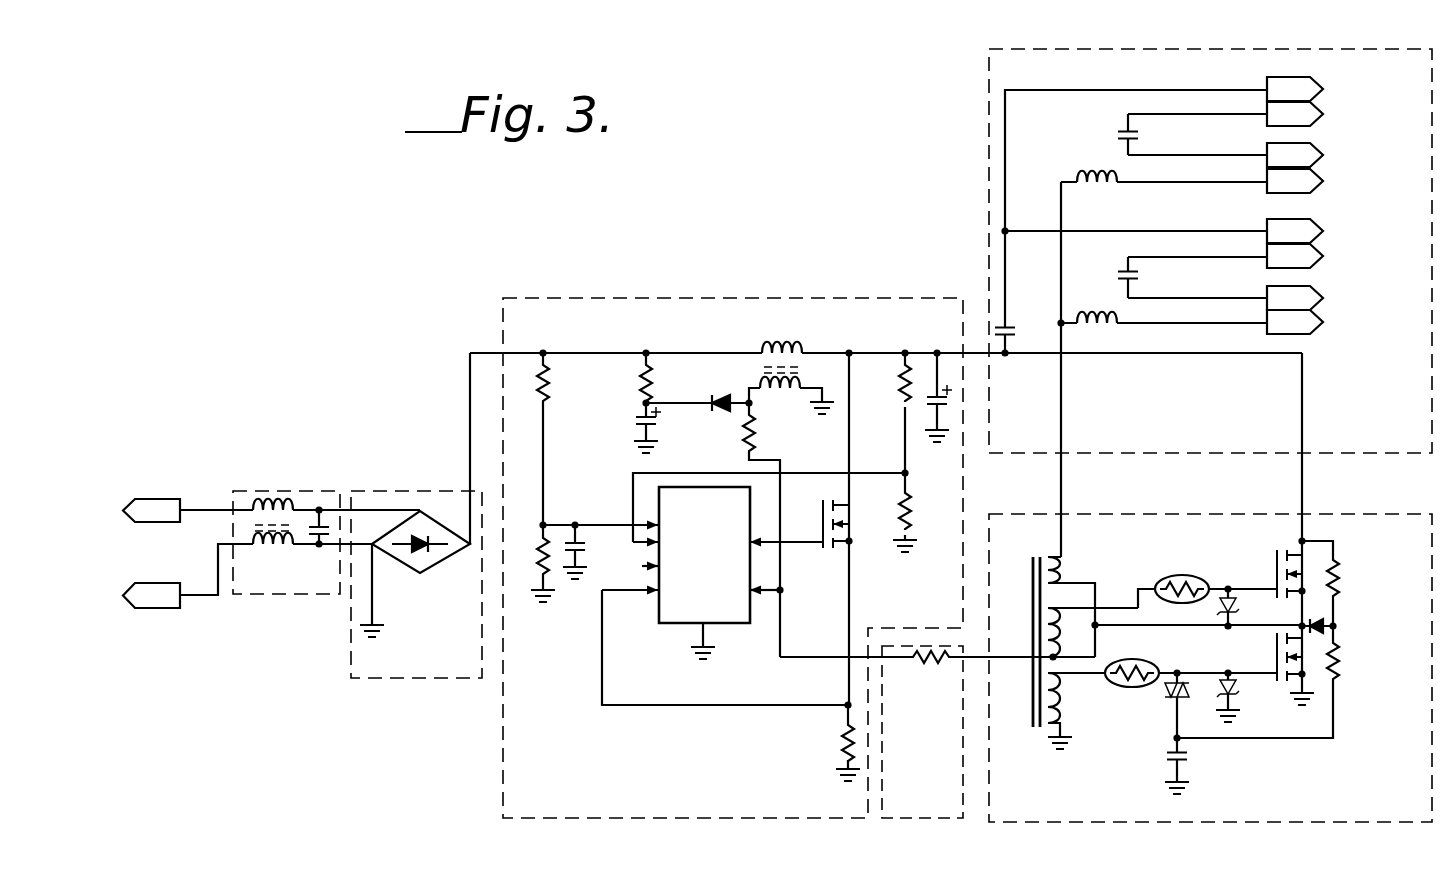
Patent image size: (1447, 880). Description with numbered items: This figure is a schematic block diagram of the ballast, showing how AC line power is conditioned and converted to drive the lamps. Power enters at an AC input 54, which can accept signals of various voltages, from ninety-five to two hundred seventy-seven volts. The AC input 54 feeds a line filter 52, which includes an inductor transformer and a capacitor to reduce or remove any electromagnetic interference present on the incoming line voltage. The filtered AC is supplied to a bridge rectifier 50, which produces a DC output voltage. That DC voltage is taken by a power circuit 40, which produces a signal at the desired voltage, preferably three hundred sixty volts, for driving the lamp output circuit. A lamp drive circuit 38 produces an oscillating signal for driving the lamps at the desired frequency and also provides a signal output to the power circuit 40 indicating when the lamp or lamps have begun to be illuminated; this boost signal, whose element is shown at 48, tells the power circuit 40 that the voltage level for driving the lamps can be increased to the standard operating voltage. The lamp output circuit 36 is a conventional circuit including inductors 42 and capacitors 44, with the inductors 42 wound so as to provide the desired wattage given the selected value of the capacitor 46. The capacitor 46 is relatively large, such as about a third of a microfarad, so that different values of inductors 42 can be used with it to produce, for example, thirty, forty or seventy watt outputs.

The lamp output circuit 36 is at (1182, 290).
The lamp drive circuit 38 is at (1115, 822).
The power circuit 40 is at (668, 818).
The inductors 42 is at (1090, 180).
The capacitors 44 is at (1140, 136).
The capacitor 46 is at (1048, 311).
The boost signal element 48 is at (935, 818).
The bridge rectifier 50 is at (417, 678).
The line filter 52 is at (288, 594).
The AC input 54 is at (156, 476).